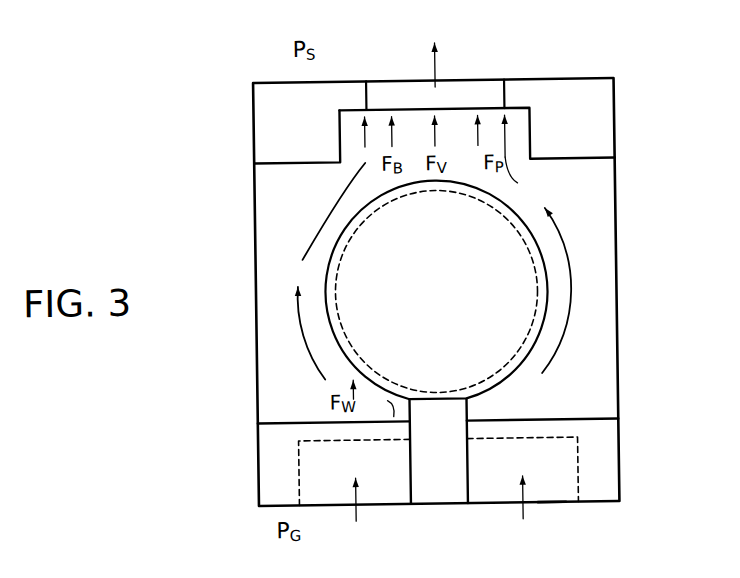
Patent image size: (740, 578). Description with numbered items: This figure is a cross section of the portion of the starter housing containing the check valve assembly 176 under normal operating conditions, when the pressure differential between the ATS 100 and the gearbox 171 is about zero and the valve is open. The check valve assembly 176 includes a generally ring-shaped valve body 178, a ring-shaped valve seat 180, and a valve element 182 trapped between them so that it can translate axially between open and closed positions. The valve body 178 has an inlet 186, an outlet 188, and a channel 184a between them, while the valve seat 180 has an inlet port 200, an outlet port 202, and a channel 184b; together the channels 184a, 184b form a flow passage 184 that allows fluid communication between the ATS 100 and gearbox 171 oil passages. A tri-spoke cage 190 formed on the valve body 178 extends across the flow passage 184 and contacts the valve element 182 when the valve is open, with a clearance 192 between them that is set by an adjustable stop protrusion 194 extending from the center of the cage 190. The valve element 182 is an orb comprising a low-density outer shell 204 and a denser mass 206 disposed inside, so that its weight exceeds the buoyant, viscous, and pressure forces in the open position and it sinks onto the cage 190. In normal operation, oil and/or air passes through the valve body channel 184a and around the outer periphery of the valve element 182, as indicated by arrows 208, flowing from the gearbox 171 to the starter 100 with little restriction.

The air turbine starter 100 is at (456, 31).
The gearbox 171 is at (452, 555).
The check valve assembly 176 is at (200, 216).
The valve body 178 is at (603, 449).
The valve seat 180 is at (603, 130).
The valve element 182 is at (550, 269).
The flow passage 184 is at (256, 285).
The valve body channel 184a is at (546, 482).
The valve seat channel 184b is at (364, 154).
The inlet 186 is at (549, 504).
The outlet 188 is at (567, 301).
The cage 190 is at (565, 432).
The clearance 192 is at (390, 404).
The stop protrusion 194 is at (465, 415).
The inlet port 200 is at (520, 156).
The outlet port 202 is at (512, 80).
The outer shell 204 is at (537, 258).
The mass 206 is at (496, 308).
The arrows 208 is at (310, 348).